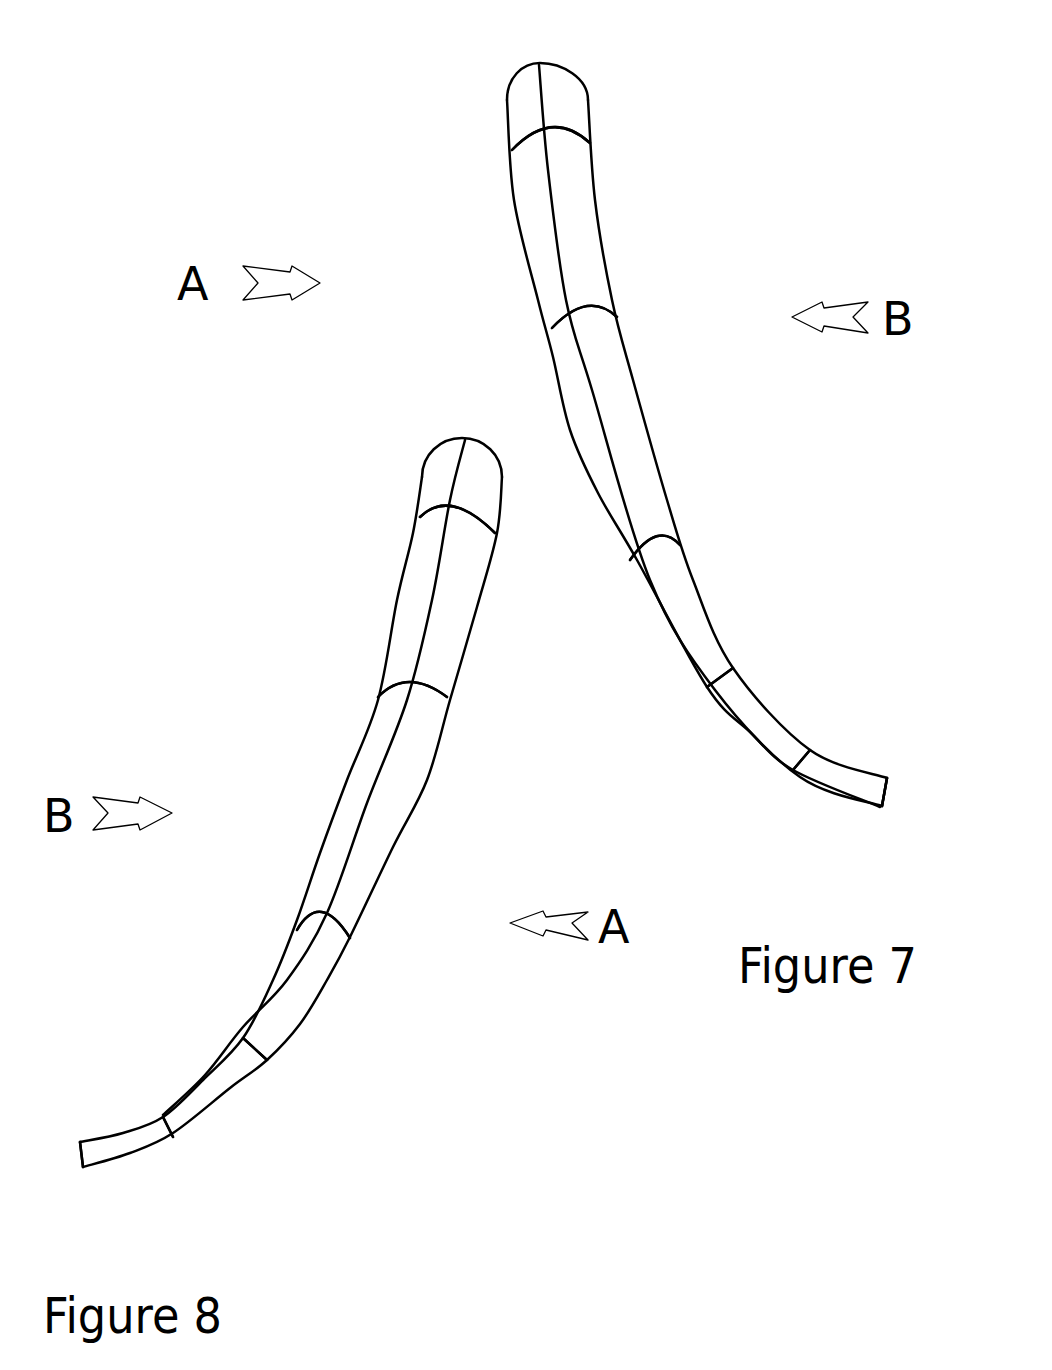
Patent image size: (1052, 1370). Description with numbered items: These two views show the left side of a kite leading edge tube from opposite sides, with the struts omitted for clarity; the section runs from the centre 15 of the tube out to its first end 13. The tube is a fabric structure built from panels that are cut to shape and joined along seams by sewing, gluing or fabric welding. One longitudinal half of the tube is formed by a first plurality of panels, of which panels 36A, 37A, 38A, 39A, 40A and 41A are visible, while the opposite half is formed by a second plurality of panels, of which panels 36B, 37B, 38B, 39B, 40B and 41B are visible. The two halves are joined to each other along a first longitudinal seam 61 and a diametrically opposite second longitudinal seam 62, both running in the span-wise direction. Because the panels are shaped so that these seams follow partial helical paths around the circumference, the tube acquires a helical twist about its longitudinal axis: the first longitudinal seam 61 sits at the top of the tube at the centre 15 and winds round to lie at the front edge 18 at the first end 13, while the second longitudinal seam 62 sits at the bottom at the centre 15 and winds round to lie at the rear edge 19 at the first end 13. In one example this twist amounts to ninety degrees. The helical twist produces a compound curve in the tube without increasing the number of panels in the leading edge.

In FIG. 7, the first end of the tube 13 is at (888, 797).
In FIG. 8, the first end of the tube 13 is at (77, 1158).
In FIG. 7, the centre of the tube 15 is at (540, 62).
In FIG. 8, the centre of the tube 15 is at (467, 437).
In FIG. 7, the front edge 18 is at (505, 204).
In FIG. 8, the front edge 18 is at (386, 899).
In FIG. 7, the rear edge 19 is at (680, 507).
In FIG. 8, the rear edge 19 is at (319, 852).
In FIG. 7, the panel 36A is at (523, 112).
In FIG. 8, the panel 36A is at (482, 490).
In FIG. 7, the panel 36B is at (573, 108).
In FIG. 8, the panel 36B is at (437, 488).
In FIG. 7, the panel 37A is at (538, 238).
In FIG. 8, the panel 37A is at (458, 608).
In FIG. 7, the panel 37B is at (580, 210).
In FIG. 8, the panel 37B is at (418, 597).
In FIG. 7, the panel 38A is at (568, 367).
In FIG. 8, the panel 38A is at (398, 800).
In FIG. 7, the panel 38B is at (627, 432).
In FIG. 8, the panel 38B is at (380, 727).
In FIG. 7, the panel 39A is at (663, 630).
In FIG. 8, the panel 39A is at (303, 993).
In FIG. 7, the panel 39B is at (698, 617).
In FIG. 8, the panel 39B is at (303, 935).
In FIG. 7, the panel 40A is at (737, 728).
In FIG. 8, the panel 40A is at (225, 1083).
In FIG. 7, the panel 40B is at (758, 722).
In FIG. 8, the panel 40B is at (227, 1053).
In FIG. 7, the panel 41A is at (835, 793).
In FIG. 8, the panel 41A is at (127, 1145).
In FIG. 7, the panel 41B is at (855, 775).
In FIG. 7, the first longitudinal seam 61 is at (592, 393).
In FIG. 8, the second longitudinal seam 62 is at (365, 805).